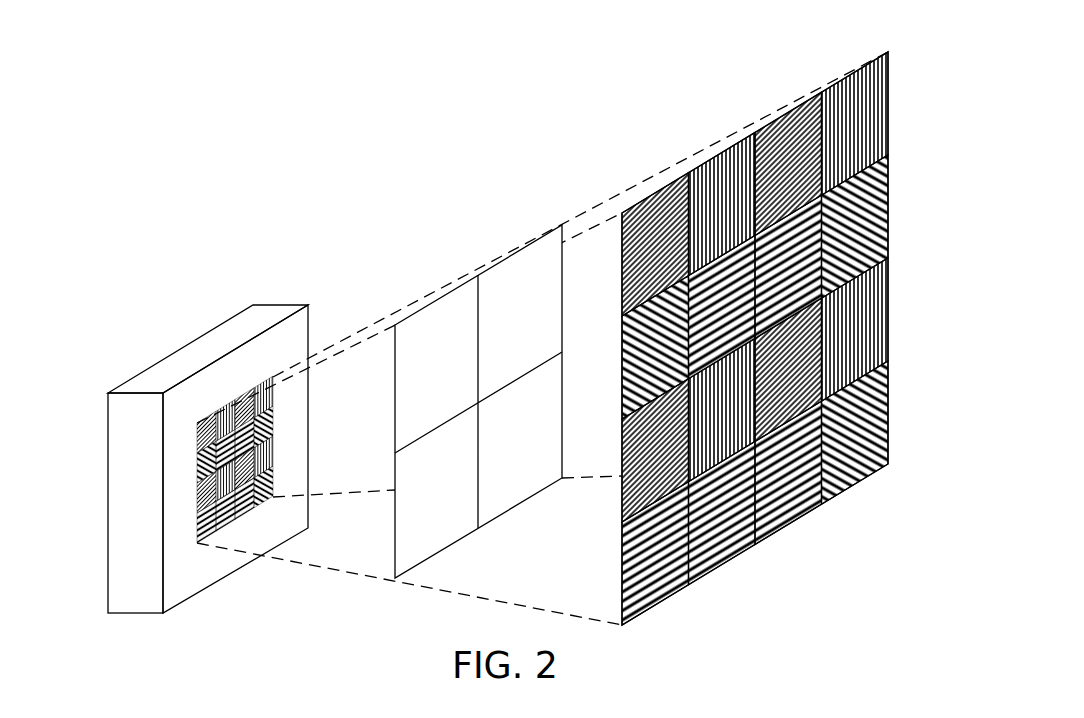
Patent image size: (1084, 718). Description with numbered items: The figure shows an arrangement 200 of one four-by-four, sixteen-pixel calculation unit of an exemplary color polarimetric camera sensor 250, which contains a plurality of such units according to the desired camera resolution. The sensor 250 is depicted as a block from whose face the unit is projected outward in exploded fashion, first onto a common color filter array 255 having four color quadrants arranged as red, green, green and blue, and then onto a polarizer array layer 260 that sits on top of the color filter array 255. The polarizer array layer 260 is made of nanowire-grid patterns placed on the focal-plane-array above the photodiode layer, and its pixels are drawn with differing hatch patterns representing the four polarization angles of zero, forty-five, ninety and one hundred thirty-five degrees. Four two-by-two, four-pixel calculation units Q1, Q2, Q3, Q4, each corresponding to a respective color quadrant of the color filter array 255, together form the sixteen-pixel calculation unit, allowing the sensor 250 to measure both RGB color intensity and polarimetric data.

The display system 200 is at (382, 125).
The color polarimetric camera sensor 250 is at (86, 308).
The common color filter array 255 is at (494, 543).
The polarizer array layer 260 is at (820, 558).
The calculation unit Q1 is at (656, 145).
The calculation unit Q2 is at (910, 177).
The calculation unit Q3 is at (922, 365).
The calculation unit Q4 is at (700, 604).